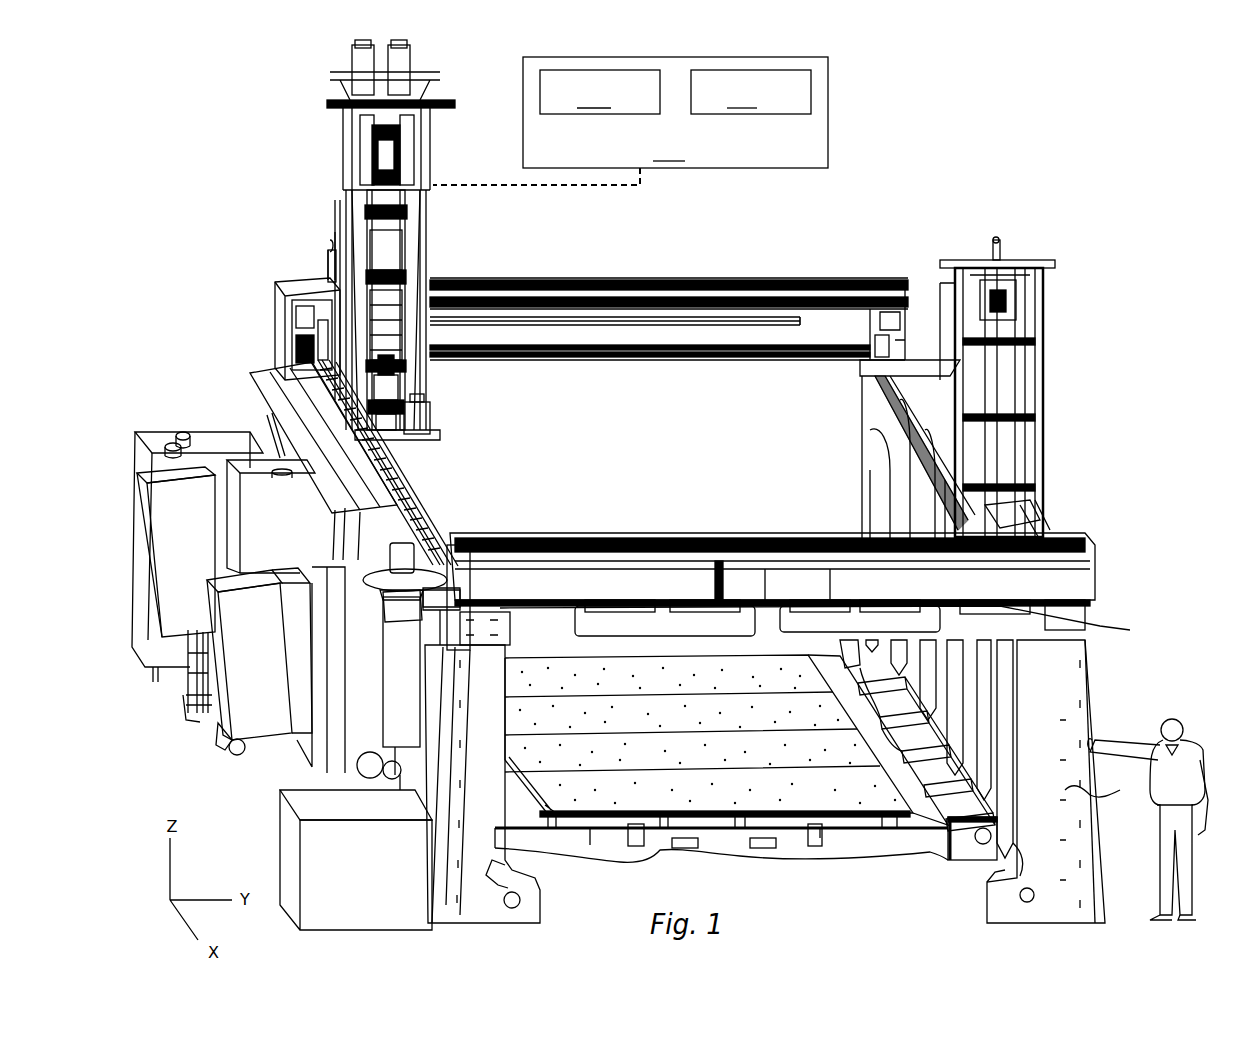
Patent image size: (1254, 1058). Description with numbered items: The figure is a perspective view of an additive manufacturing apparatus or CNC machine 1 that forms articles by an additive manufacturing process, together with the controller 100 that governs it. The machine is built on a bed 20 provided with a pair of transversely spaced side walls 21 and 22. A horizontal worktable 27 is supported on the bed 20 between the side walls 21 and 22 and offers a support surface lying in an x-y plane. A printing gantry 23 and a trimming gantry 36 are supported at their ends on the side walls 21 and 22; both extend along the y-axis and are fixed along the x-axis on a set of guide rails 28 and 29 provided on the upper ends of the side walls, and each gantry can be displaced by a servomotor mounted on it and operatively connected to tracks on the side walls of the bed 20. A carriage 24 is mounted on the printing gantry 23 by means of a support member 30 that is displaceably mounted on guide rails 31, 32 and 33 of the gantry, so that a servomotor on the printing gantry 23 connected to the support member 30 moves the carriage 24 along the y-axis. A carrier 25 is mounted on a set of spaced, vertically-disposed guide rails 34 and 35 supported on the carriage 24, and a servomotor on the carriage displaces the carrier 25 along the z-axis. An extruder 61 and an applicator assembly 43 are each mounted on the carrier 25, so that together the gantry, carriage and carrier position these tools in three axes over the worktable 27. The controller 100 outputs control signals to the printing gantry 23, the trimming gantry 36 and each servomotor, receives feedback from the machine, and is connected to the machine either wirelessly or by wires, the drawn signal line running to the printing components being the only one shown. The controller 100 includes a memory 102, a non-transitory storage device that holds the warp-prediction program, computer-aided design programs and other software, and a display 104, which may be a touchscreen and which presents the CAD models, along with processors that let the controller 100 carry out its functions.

The CNC machine 1 is at (1035, 165).
The bed 20 is at (648, 855).
The side wall 21 is at (487, 760).
The side wall 22 is at (1082, 792).
The printing gantry 23 is at (848, 282).
The carriage 24 is at (332, 240).
The carrier 25 is at (440, 170).
The horizontal worktable 27 is at (672, 740).
The guide rail 28 is at (430, 508).
The guide rail 29 is at (895, 392).
The support member 30 is at (328, 268).
The guide rail 31 is at (706, 278).
The guide rail 32 is at (635, 297).
The guide rail 33 is at (658, 357).
The guide rail 34 is at (345, 207).
The guide rail 35 is at (404, 362).
The trimming gantry 36 is at (1043, 540).
The applicator assembly 43 is at (402, 447).
The extruder 61 is at (405, 290).
The controller 100 is at (630, 121).
The memory 102 is at (600, 92).
The display 104 is at (751, 92).